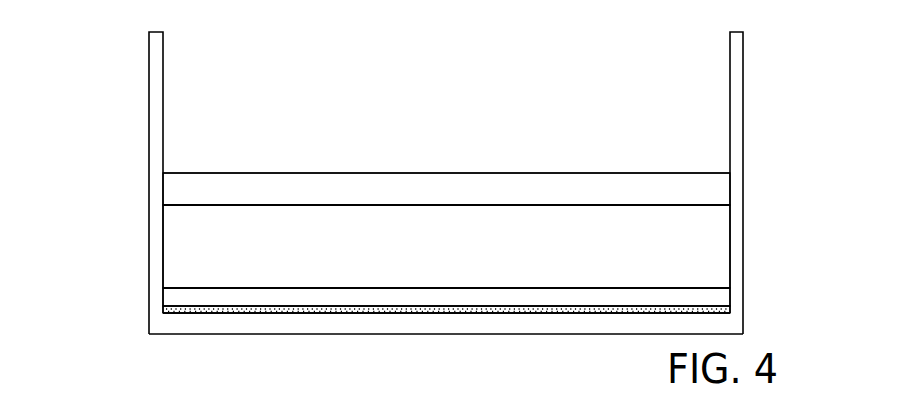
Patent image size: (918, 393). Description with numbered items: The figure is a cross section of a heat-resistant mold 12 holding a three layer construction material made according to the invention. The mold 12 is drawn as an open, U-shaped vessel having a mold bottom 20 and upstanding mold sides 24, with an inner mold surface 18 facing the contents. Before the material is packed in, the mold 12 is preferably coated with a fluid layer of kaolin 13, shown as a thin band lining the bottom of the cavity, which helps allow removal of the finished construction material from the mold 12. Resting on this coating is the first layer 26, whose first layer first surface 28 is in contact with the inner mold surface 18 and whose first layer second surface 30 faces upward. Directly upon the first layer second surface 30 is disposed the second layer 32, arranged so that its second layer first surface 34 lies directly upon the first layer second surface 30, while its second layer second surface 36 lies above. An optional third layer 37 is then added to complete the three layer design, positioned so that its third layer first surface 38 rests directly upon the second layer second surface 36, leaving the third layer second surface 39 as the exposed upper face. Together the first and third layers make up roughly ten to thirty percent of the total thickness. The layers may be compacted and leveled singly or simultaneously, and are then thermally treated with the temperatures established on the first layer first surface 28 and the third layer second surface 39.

The mold 12 is at (121, 209).
The fluid layer of kaolin 13 is at (238, 313).
The inner mold surface 18 is at (402, 322).
The mold bottom 20 is at (298, 348).
The mold sides 24 is at (754, 76).
The first layer 26 is at (164, 298).
The first layer first surface 28 is at (498, 309).
The first layer second surface 30 is at (600, 300).
The second layer 32 is at (184, 245).
The second layer first surface 34 is at (690, 278).
The second layer second surface 36 is at (690, 210).
The third layer 37 is at (177, 186).
The third layer first surface 38 is at (704, 200).
The third layer second surface 39 is at (700, 163).